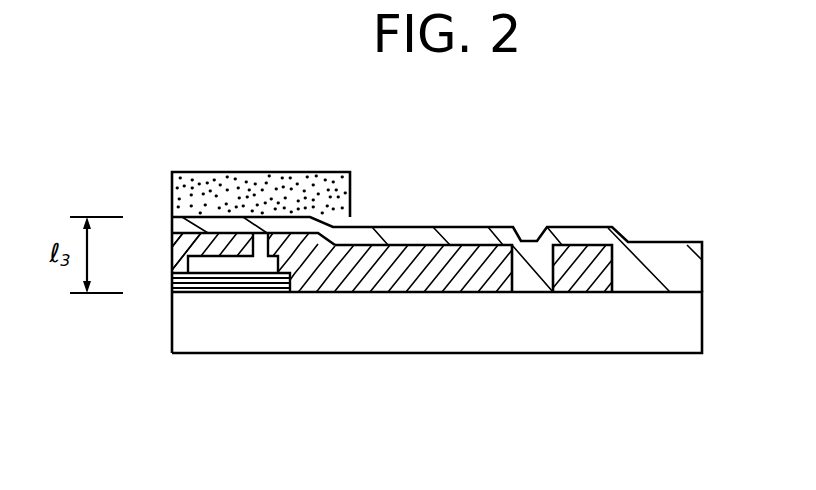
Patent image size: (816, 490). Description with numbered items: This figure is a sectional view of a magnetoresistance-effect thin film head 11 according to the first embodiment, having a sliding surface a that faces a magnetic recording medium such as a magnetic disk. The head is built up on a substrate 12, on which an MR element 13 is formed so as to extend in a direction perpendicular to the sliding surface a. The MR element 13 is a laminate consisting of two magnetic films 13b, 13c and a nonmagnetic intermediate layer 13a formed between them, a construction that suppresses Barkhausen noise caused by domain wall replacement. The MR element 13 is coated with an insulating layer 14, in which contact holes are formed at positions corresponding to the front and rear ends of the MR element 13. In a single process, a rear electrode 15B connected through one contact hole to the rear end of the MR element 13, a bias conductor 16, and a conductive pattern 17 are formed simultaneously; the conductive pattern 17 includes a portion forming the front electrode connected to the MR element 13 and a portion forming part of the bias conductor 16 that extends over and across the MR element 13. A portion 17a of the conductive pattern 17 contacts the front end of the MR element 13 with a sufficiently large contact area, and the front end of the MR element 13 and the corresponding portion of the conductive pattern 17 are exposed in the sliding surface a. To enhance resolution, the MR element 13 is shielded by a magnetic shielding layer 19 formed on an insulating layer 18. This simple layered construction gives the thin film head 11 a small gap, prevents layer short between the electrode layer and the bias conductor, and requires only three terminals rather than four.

The thin film head 11 is at (74, 150).
The substrate 12 is at (687, 323).
The MR element 13 is at (310, 400).
The nonmagnetic intermediate layer 13a is at (223, 283).
The magnetic film 13b is at (262, 285).
The magnetic film 13c is at (186, 290).
The insulating layer 14 is at (262, 266).
The rear electrode 15B is at (423, 262).
The bias conductor 16 is at (581, 257).
The conductive pattern 17 is at (207, 243).
The portion of the conductive pattern 17a is at (182, 248).
The insulating layer 18 is at (371, 237).
The magnetic shielding layer 19 is at (330, 195).
The sliding surface a is at (172, 292).